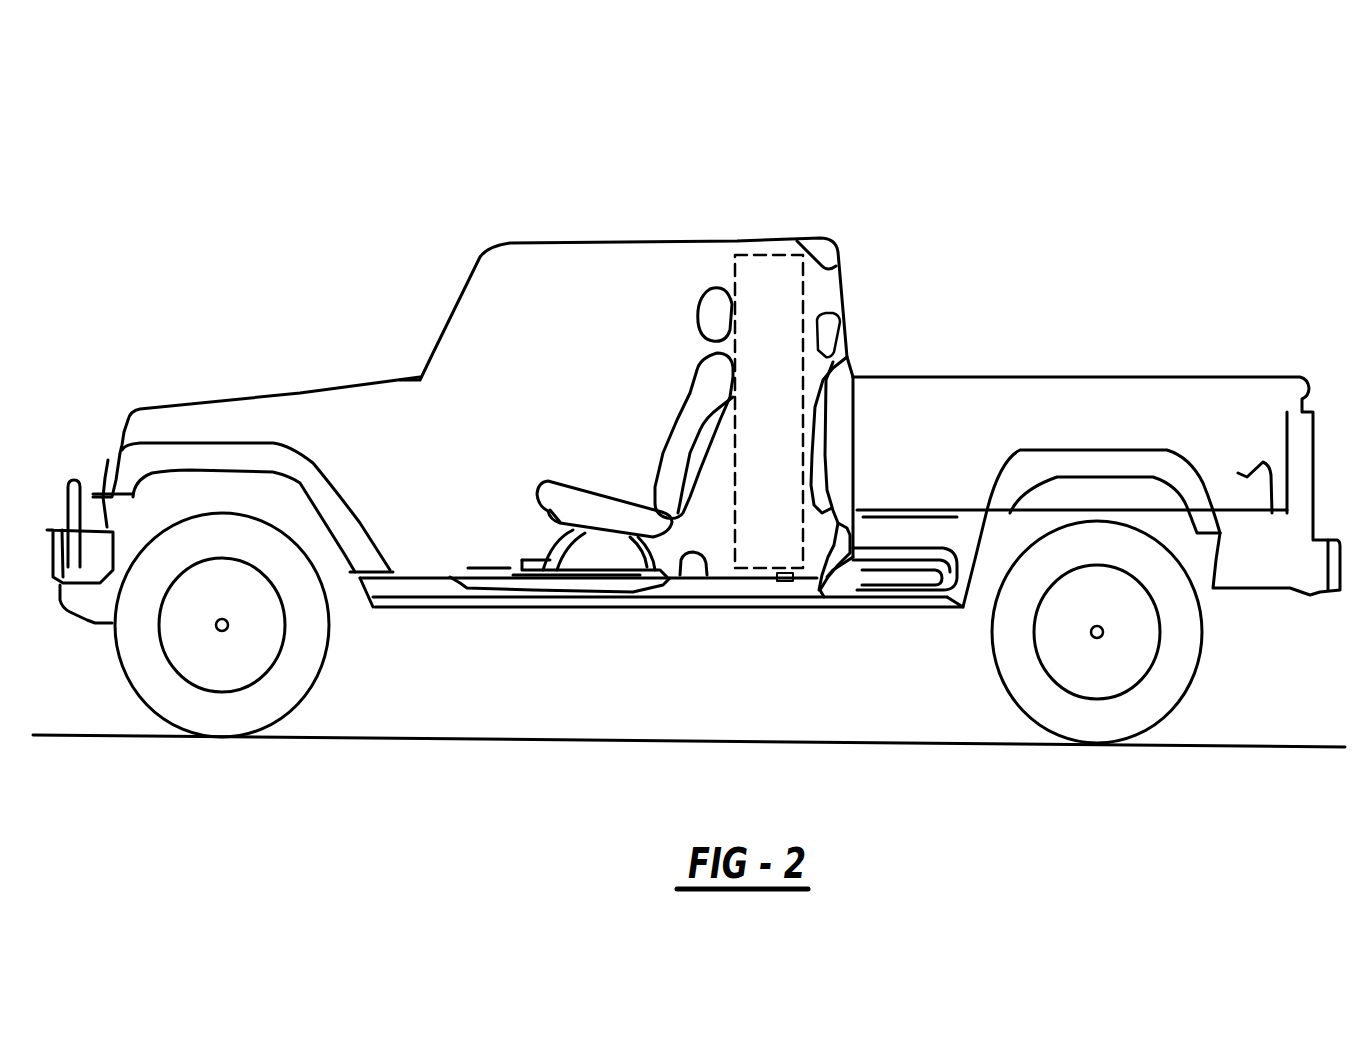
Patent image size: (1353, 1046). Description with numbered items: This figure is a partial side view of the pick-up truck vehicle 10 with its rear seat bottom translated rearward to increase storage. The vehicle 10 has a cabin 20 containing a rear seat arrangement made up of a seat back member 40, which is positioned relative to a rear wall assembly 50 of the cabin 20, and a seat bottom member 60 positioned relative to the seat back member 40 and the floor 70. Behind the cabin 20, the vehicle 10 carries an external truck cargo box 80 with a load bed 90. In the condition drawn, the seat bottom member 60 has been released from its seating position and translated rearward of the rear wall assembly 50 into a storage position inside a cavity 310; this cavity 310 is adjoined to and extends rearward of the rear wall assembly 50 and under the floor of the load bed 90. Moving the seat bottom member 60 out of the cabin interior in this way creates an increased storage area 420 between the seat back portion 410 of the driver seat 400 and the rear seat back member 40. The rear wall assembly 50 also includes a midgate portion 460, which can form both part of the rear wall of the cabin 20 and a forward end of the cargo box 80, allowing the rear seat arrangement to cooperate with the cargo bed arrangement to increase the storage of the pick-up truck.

The pick-up truck vehicle 10 is at (917, 226).
The cabin 20 is at (617, 241).
The seat back member 40 is at (827, 595).
The rear wall assembly 50 is at (851, 297).
The seat bottom member 60 is at (890, 572).
The floor 70 is at (686, 577).
The external truck cargo box 80 is at (1140, 336).
The load bed 90 is at (1238, 473).
The cavity 310 is at (913, 548).
The driver seat 400 is at (630, 426).
The seat back portion 410 is at (702, 449).
The increased storage area 420 is at (761, 255).
The midgate portion 460 is at (853, 378).